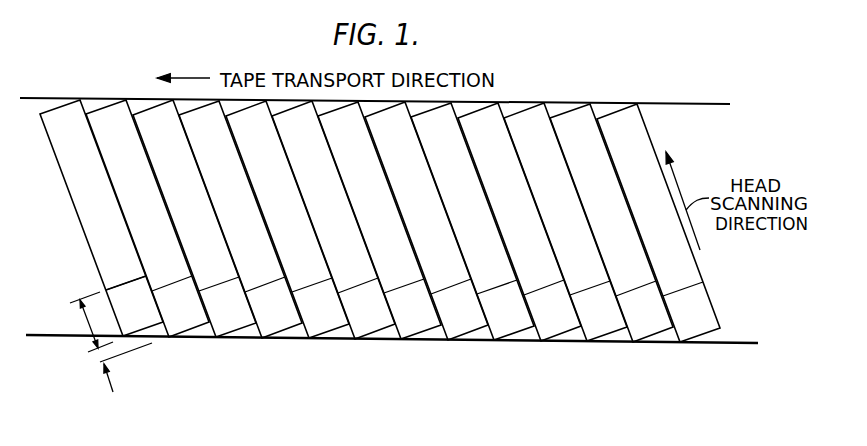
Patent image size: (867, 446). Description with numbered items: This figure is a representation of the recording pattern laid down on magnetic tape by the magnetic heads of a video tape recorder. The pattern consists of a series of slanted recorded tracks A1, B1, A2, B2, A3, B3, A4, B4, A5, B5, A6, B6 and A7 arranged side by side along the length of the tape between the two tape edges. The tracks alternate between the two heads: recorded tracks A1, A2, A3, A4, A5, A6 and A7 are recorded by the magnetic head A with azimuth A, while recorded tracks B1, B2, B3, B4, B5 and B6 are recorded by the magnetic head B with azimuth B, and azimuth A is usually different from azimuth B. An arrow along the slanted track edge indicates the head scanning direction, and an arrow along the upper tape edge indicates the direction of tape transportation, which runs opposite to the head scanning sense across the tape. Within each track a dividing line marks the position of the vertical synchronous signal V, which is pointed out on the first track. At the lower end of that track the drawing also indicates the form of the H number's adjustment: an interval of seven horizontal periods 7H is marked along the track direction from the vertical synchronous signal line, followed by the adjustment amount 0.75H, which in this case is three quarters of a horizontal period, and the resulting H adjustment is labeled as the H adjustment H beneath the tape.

The recorded track A1 is at (143, 336).
The recorded track B1 is at (189, 337).
The recorded track A2 is at (236, 337).
The recorded track B2 is at (282, 338).
The recorded track A3 is at (329, 338).
The recorded track B3 is at (375, 339).
The recorded track A4 is at (421, 339).
The recorded track B4 is at (468, 340).
The recorded track A5 is at (514, 340).
The recorded track B5 is at (561, 341).
The recorded track A6 is at (607, 341).
The recorded track B6 is at (653, 342).
The recorded track A7 is at (700, 342).
The vertical synchronous signal V is at (123, 294).
The H number interval 7H is at (86, 327).
The H number's adjustment 0.75H is at (101, 357).
The H adjustment H is at (63, 378).